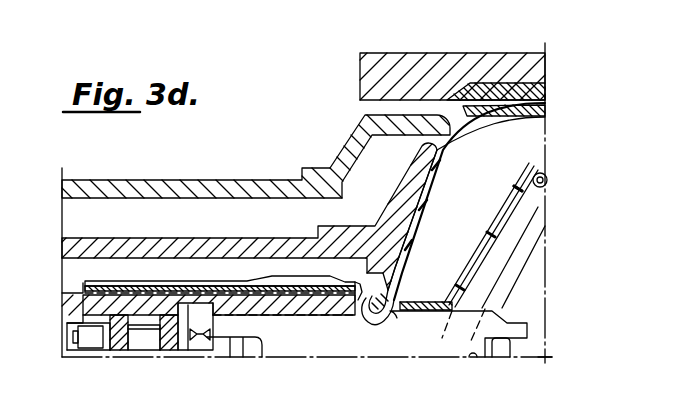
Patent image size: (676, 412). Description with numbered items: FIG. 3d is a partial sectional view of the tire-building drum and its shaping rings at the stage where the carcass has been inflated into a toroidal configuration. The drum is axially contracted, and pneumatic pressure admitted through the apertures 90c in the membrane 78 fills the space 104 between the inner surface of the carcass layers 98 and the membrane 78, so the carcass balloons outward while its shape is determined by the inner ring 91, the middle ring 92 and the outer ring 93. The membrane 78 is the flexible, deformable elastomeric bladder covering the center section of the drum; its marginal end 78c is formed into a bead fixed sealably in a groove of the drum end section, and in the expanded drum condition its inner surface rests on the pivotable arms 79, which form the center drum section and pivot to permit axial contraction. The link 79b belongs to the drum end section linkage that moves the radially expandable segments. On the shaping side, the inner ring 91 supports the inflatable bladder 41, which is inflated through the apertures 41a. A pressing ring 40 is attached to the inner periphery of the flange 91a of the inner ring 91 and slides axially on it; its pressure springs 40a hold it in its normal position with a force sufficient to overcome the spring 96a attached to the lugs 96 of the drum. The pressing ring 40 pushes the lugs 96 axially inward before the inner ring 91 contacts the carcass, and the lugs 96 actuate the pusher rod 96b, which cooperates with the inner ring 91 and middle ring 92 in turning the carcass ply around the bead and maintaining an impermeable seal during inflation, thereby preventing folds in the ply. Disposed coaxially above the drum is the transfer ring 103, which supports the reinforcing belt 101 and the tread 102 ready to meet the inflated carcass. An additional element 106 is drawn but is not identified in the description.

The transfer ring 103 is at (423, 57).
The tread 102 is at (545, 90).
The reinforcing belt 101 is at (546, 106).
The carcass layers 98 is at (500, 117).
The link 79b is at (548, 180).
The apertures in membrane 90c is at (518, 190).
The space 104 is at (482, 221).
The membrane 78 is at (472, 268).
The marginal end of membrane 78c is at (390, 322).
The pivotable arms 79 is at (518, 242).
The outer ring 93 is at (178, 187).
The middle ring 92 is at (185, 243).
The inflatable bladder 41 is at (117, 283).
The apertures 41a is at (343, 290).
The thin hatched strip under plate 106 is at (262, 285).
The inner ring 91 is at (313, 308).
The flange of inner ring 91a is at (72, 300).
The pressing ring 40 is at (110, 347).
The pressure springs 40a is at (147, 340).
The lugs 96 is at (183, 340).
The spring 96a is at (203, 339).
The pusher rod 96b is at (287, 315).